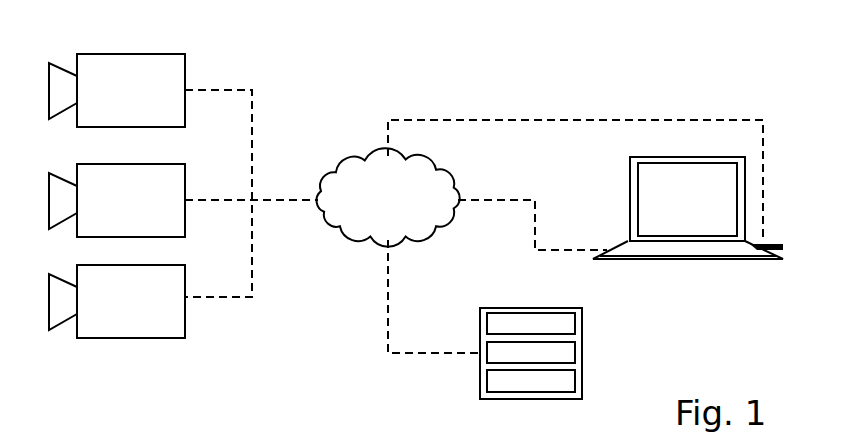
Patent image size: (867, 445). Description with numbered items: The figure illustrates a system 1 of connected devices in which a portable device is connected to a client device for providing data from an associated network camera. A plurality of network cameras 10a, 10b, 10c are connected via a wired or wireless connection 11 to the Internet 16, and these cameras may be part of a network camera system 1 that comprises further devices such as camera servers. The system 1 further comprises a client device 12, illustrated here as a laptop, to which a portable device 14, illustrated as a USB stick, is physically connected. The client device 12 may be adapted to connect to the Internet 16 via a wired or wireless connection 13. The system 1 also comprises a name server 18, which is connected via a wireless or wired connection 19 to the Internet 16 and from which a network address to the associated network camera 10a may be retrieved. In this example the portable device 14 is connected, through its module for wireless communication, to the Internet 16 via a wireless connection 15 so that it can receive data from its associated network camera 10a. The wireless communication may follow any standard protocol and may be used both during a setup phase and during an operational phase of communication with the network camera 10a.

The system 1 is at (382, 47).
The network camera 10a is at (117, 90).
The network camera 10b is at (117, 200).
The network camera 10c is at (117, 301).
The wired or wireless connection 11 is at (251, 193).
The client device 12 is at (688, 208).
The wired or wireless connection 13 is at (532, 225).
The portable device 14 is at (775, 233).
The wireless connection 15 is at (575, 167).
The Internet 16 is at (388, 197).
The name server 18 is at (531, 369).
The wireless or wired connection 19 is at (434, 296).